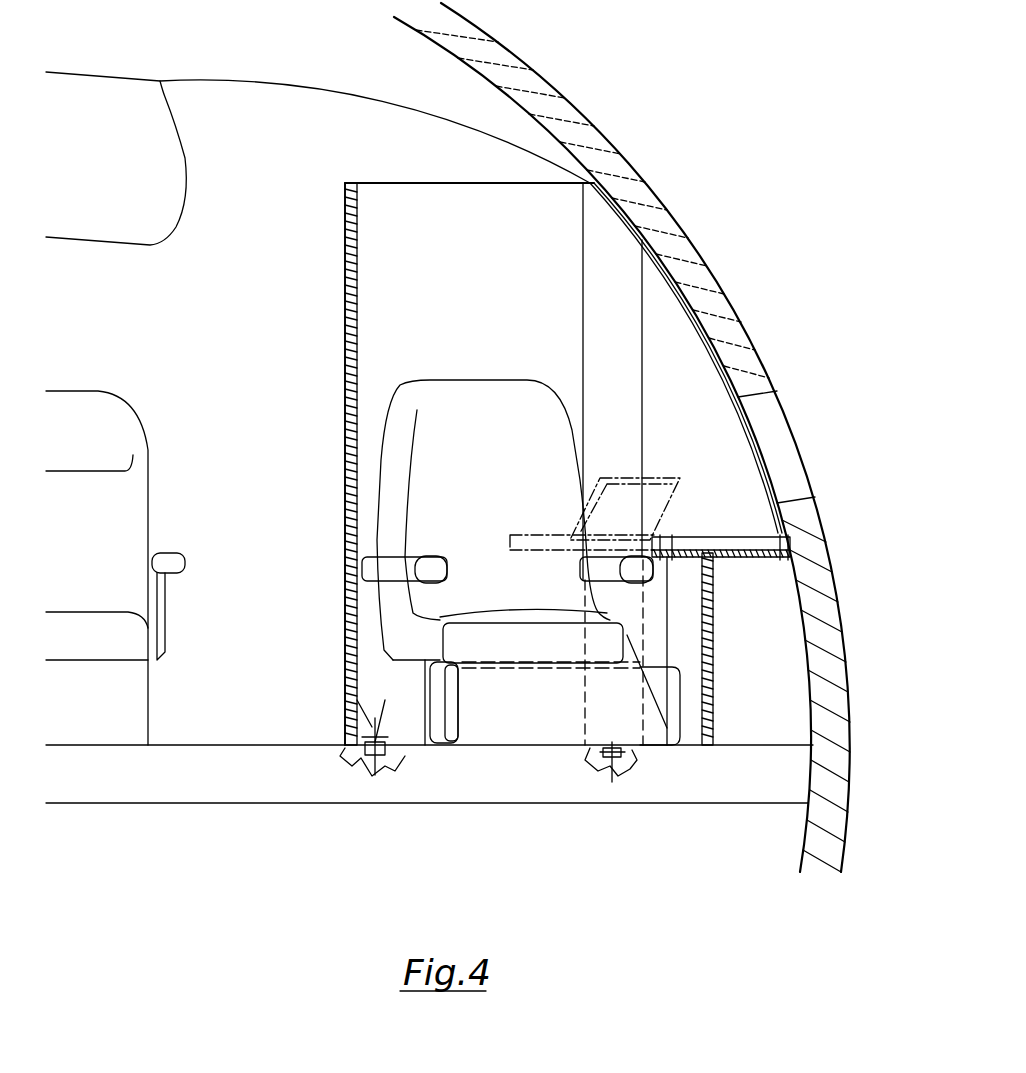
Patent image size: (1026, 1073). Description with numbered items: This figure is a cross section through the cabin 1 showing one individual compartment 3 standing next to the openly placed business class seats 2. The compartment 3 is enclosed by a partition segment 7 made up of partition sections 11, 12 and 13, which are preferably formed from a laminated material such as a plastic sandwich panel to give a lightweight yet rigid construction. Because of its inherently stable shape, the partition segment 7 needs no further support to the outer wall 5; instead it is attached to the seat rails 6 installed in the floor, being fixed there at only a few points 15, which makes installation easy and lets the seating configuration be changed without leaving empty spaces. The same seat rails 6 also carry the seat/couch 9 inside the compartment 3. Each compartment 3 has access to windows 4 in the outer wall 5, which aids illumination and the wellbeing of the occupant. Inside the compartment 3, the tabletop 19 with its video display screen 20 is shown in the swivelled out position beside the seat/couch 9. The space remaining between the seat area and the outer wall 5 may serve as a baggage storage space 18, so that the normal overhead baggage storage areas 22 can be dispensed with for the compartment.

The cabin section 1 is at (240, 190).
The business class seats 2 is at (83, 415).
The compartment 3 is at (527, 228).
The windows 4 is at (790, 432).
The outer wall 5 is at (520, 78).
The seat rails 6 is at (603, 757).
The partition segment 7 is at (333, 352).
The seat/couch 9 is at (425, 463).
The partition section 11 is at (345, 300).
The partition section 12 is at (408, 200).
The partition section 13 is at (614, 346).
The fixing points 15 is at (367, 723).
The baggage storage space 18 is at (753, 687).
The tabletop 19 is at (533, 535).
The video display screen 20 is at (673, 497).
The overhead baggage storage areas 22 is at (100, 98).